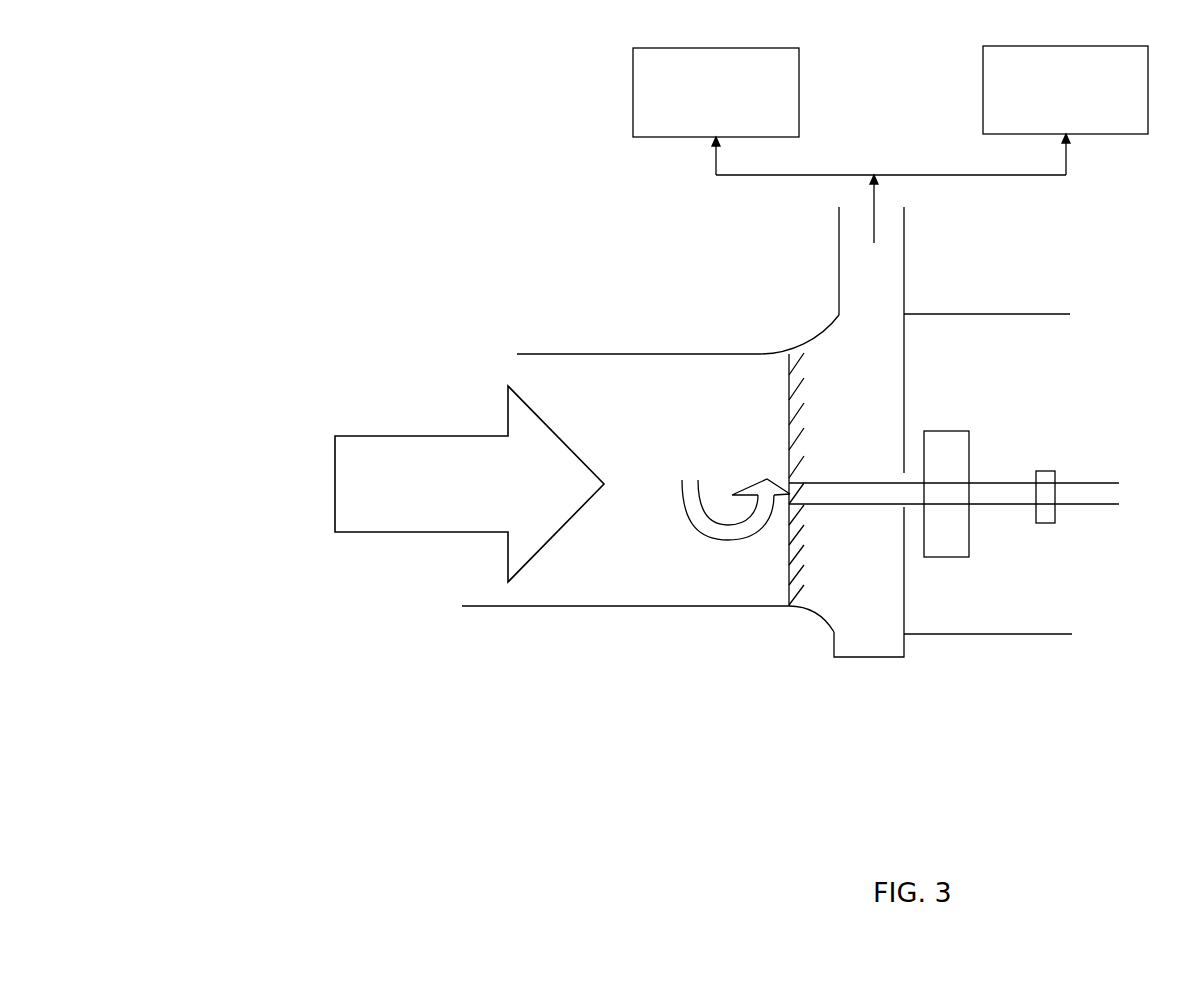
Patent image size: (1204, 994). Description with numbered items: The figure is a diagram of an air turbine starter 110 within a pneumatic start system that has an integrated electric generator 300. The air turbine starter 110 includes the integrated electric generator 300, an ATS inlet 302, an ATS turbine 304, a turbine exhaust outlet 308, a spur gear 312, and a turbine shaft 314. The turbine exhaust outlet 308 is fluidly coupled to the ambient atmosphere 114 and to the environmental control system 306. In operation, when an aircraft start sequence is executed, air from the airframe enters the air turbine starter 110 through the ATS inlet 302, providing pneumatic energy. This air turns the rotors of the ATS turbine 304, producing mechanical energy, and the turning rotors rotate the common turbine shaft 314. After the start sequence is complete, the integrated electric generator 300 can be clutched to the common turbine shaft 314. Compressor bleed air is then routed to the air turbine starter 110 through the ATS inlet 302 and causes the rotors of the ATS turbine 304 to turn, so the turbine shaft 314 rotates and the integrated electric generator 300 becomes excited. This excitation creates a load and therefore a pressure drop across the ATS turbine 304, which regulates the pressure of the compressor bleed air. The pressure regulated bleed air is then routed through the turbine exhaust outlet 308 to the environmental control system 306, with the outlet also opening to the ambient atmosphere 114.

The air turbine starter 110 is at (385, 768).
The ambient atmosphere 114 is at (696, 126).
The integrated electric generator 300 is at (946, 557).
The ATS inlet 302 is at (398, 497).
The ATS turbine 304 is at (790, 385).
The environmental control system 306 is at (1044, 124).
The turbine exhaust outlet 308 is at (875, 286).
The spur gear 312 is at (1044, 523).
The turbine shaft 314 is at (1097, 493).